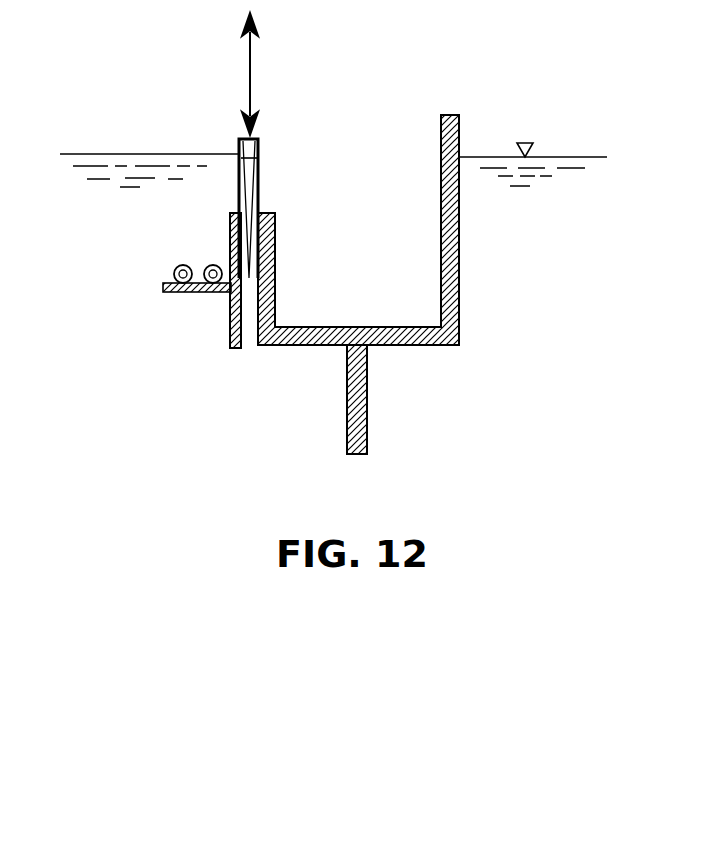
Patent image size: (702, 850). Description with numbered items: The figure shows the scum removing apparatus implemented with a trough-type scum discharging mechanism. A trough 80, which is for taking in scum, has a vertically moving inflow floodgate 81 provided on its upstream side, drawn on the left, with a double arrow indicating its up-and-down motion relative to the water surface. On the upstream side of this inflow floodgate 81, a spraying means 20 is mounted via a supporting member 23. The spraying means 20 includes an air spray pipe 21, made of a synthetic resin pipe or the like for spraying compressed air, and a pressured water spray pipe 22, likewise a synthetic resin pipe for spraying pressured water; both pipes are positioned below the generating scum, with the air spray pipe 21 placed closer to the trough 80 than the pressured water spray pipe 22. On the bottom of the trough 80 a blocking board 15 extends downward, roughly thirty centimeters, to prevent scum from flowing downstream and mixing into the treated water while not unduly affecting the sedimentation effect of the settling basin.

The blocking board 15 is at (367, 410).
The spraying means 20 is at (133, 284).
The air spray pipe 21 is at (198, 243).
The pressured water spray pipe 22 is at (178, 266).
The support member 23 is at (180, 294).
The trough 80 is at (460, 115).
The inflow floodgate 81 is at (252, 158).